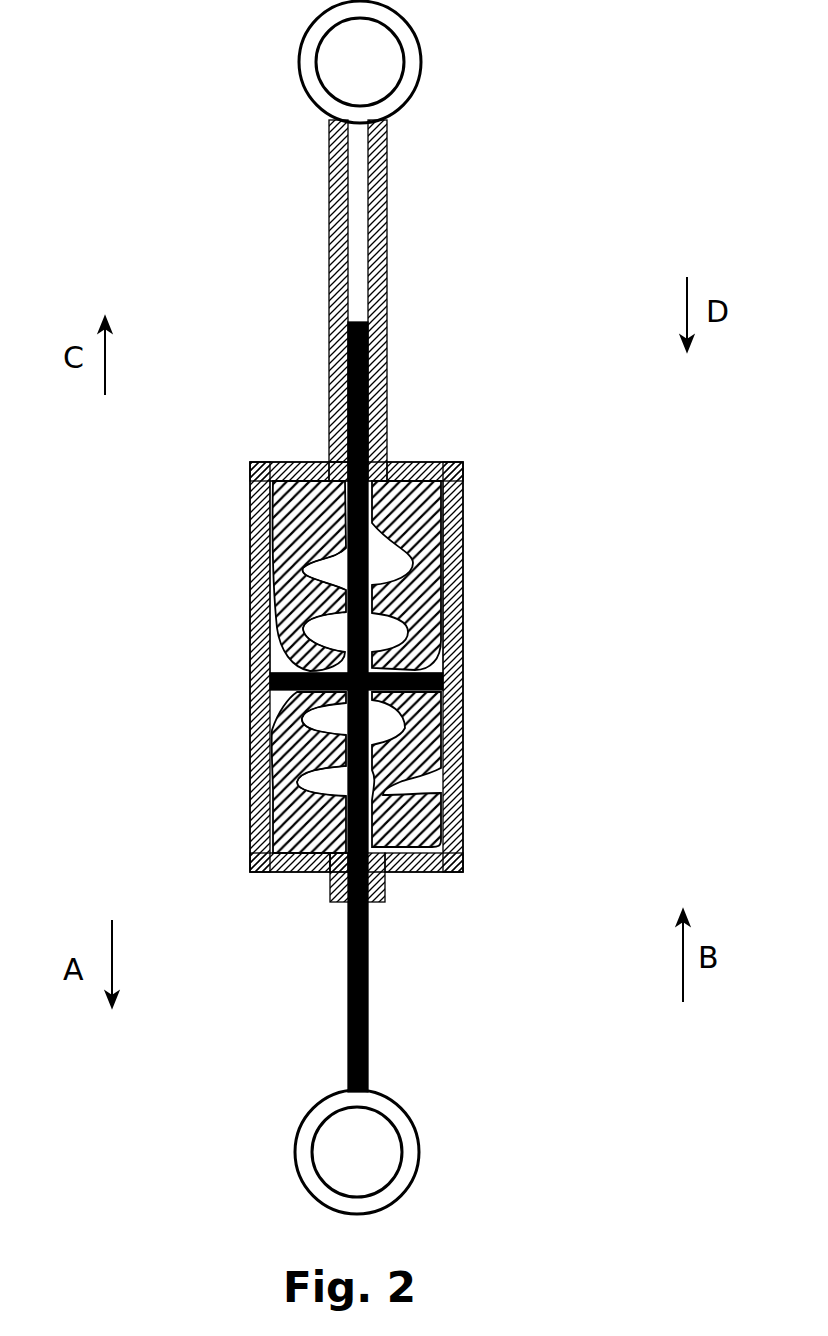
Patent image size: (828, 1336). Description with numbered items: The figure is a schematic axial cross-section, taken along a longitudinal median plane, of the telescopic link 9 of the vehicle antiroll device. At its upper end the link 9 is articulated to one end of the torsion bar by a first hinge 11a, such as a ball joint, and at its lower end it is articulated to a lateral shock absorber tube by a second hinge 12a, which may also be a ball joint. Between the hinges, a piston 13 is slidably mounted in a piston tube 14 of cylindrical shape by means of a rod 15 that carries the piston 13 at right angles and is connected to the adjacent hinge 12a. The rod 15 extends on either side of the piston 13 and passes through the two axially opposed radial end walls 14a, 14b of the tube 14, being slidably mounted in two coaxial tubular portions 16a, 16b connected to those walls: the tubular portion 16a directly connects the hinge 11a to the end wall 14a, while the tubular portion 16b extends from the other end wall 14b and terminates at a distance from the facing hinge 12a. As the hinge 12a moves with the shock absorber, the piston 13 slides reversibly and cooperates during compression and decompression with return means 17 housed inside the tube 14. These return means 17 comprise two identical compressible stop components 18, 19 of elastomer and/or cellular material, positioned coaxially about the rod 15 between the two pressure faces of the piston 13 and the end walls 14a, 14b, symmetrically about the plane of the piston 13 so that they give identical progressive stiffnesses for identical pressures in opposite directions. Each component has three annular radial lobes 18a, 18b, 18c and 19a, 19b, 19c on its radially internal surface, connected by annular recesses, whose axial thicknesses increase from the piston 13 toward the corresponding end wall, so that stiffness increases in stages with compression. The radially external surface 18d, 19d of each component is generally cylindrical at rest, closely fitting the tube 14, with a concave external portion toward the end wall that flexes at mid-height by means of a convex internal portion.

The telescopic link 9 is at (107, 708).
The first hinge 11a is at (300, 62).
The second hinge 12a is at (297, 1152).
The piston 13 is at (268, 682).
The piston tube 14 is at (453, 676).
The radial end wall 14a is at (415, 462).
The radial end wall 14b is at (294, 873).
The rod 15 is at (348, 968).
The tubular portion 16a is at (329, 293).
The tubular portion 16b is at (387, 886).
The return means 17 is at (282, 658).
The compressible stop component 18 is at (423, 528).
The annular radial lobe 18a is at (338, 660).
The annular radial lobe 18b is at (325, 569).
The annular radial lobe 18c is at (328, 462).
The radially external surface 18d is at (280, 543).
The compressible stop component 19 is at (423, 794).
The annular radial lobe 19a is at (324, 719).
The annular radial lobe 19b is at (321, 781).
The annular radial lobe 19c is at (318, 873).
The radially external surface 19d is at (268, 792).